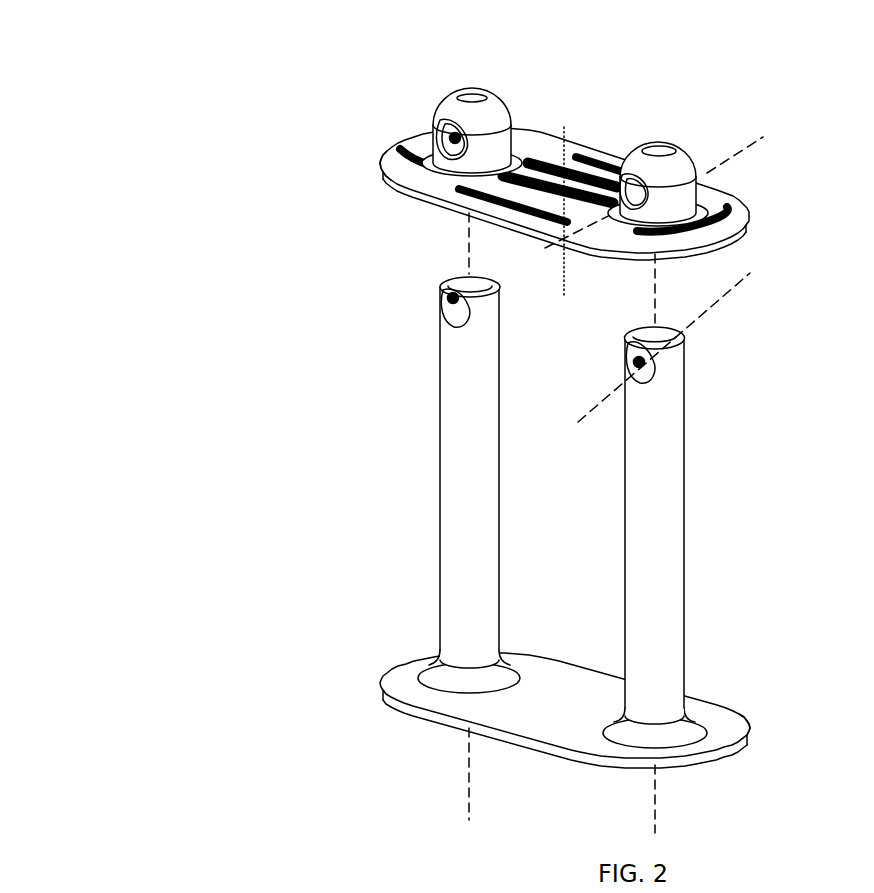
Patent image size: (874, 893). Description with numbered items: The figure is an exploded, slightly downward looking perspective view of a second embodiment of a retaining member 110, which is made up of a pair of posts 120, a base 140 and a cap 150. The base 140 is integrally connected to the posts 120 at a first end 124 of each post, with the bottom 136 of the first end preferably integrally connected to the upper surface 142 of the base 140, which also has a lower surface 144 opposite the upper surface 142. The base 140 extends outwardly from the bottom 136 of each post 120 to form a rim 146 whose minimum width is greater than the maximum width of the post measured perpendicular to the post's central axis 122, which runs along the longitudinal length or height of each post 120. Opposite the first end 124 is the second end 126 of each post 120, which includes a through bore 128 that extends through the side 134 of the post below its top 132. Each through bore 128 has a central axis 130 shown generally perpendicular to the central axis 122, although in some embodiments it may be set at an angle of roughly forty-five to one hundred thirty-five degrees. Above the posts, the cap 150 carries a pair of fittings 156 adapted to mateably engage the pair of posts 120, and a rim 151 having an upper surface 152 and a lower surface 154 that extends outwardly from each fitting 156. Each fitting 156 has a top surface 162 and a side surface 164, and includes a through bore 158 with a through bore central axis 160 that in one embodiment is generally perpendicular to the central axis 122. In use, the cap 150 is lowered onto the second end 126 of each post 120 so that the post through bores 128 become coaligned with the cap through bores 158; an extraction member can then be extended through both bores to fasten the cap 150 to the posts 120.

The retaining member 110 is at (219, 386).
The post 120 is at (440, 499).
The central axis 122 is at (462, 240).
The first end 124 is at (705, 700).
The second end 126 is at (704, 360).
The through bore 128 is at (444, 300).
The central axis 130 is at (751, 276).
The top 132 is at (647, 338).
The side 134 is at (685, 420).
The bottom 136 is at (681, 748).
The base 140 is at (369, 691).
The upper surface 142 is at (578, 720).
The lower surface 144 is at (415, 715).
The rim 146 is at (748, 736).
The cap 150 is at (397, 134).
The rim 151 is at (382, 172).
The upper surface 152 is at (527, 140).
The lower surface 154 is at (411, 191).
The fitting 156 is at (699, 136).
The through bore 158 is at (450, 138).
The through bore central axis 160 is at (760, 137).
The top surface 162 is at (657, 144).
The side surface 164 is at (699, 187).